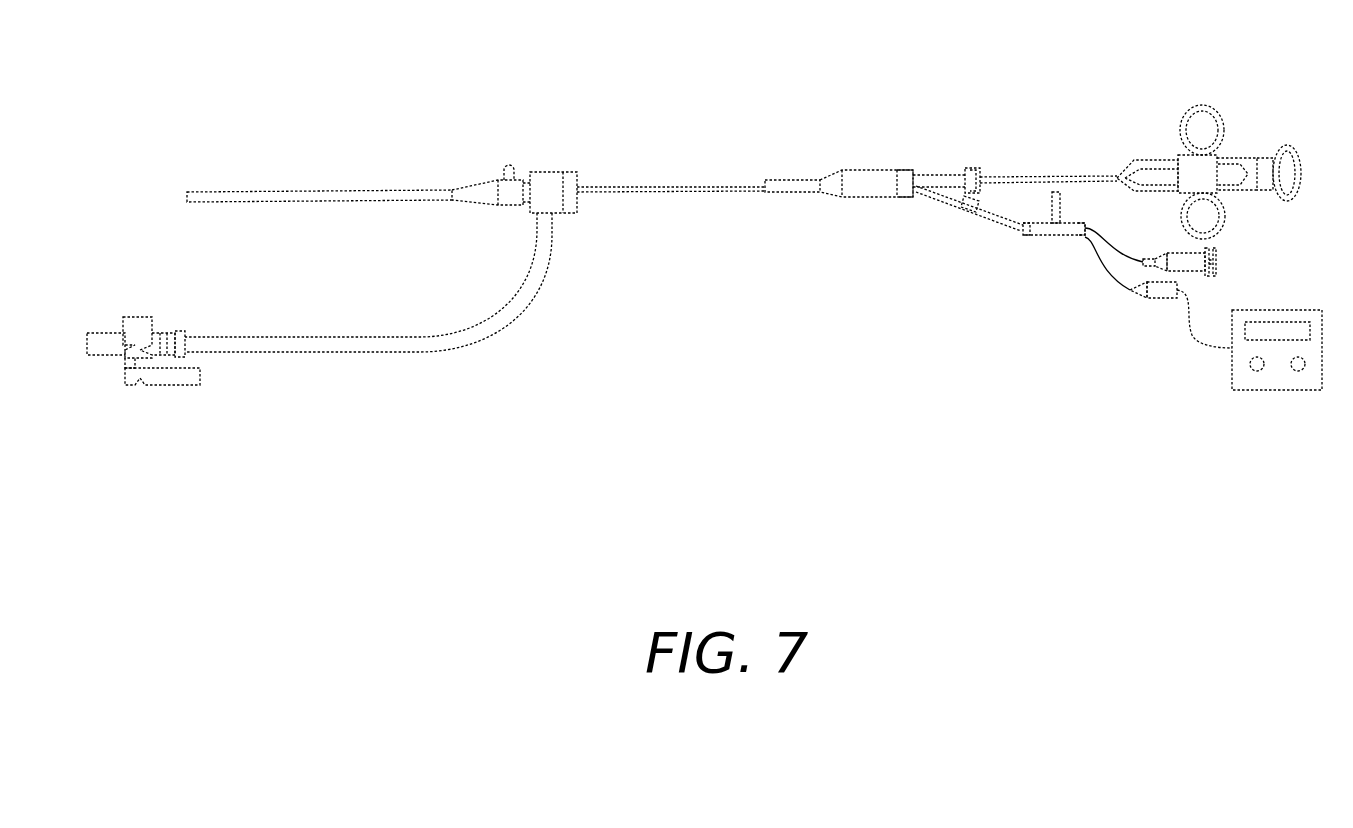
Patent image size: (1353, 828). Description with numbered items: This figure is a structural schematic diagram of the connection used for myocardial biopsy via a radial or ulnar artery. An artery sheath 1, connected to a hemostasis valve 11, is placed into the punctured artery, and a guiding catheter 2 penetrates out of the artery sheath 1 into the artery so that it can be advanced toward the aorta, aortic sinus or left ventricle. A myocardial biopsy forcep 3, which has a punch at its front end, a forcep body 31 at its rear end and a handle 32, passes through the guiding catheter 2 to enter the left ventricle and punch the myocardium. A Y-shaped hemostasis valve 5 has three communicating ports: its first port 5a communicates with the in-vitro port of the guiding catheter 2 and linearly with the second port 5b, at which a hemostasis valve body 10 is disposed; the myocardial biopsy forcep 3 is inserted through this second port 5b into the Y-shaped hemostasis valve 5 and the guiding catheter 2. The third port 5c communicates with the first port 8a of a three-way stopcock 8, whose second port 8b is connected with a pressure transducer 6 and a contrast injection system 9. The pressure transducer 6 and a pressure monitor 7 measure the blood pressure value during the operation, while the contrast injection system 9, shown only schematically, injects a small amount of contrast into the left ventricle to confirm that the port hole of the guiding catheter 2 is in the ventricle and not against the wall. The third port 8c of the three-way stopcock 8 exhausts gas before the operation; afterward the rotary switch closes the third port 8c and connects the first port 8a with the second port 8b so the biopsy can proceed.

The artery sheath 1 is at (553, 190).
The guiding catheter 2 is at (843, 180).
The myocardial biopsy forcep 3 is at (1117, 172).
The Y-shaped hemostasis valve 5 is at (933, 180).
The first port 5a is at (913, 170).
The second port 5b is at (968, 168).
The third port 5c is at (968, 206).
The pressure transducer 6 is at (1153, 290).
The pressure monitor 7 is at (1243, 315).
The three-way stopcock 8 is at (1050, 230).
The first port 8a is at (1027, 236).
The second port 8b is at (1085, 236).
The third port 8c is at (1062, 211).
The contrast injection system 9 is at (1215, 258).
The hemostasis valve body 10 is at (978, 170).
The hemostasis valve 11 is at (107, 340).
The forcep body 31 is at (1035, 177).
The handle 32 is at (1228, 157).